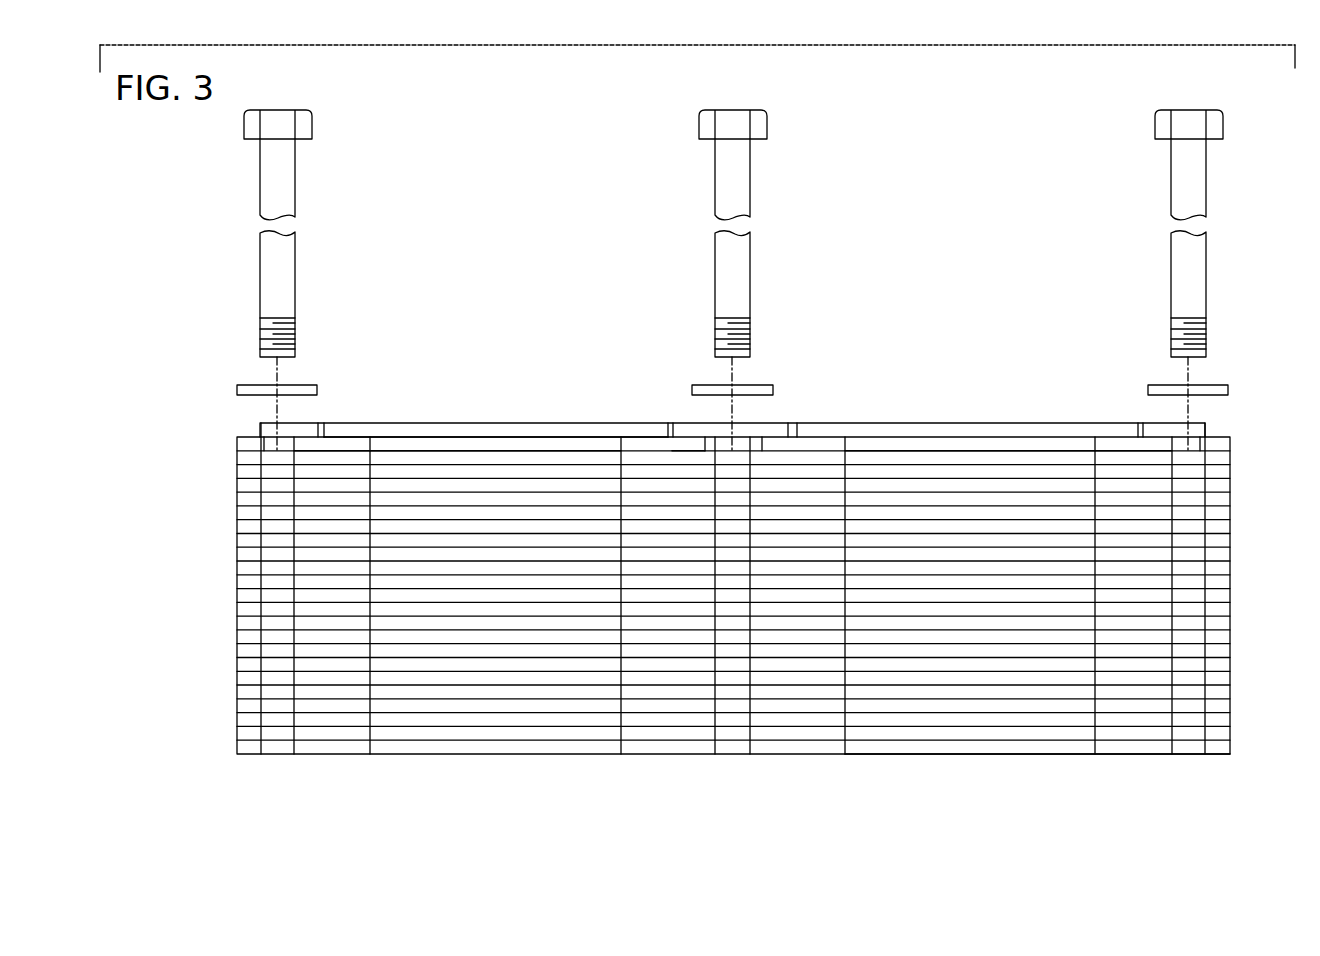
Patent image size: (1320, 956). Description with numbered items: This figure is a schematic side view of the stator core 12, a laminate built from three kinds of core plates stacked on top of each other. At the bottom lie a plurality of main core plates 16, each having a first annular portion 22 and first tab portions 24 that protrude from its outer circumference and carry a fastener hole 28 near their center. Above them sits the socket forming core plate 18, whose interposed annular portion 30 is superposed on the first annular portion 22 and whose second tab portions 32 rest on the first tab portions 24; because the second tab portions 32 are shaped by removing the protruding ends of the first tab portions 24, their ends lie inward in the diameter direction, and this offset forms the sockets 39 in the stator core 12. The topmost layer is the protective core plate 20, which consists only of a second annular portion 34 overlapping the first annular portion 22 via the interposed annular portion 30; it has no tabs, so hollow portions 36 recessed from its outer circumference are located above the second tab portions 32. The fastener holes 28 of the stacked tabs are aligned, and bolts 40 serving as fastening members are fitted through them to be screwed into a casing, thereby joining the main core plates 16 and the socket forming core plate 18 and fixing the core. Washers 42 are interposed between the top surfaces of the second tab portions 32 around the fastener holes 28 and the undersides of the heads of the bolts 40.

The stator core 12 is at (1242, 514).
The main core plate 16 is at (981, 735).
The socket forming core plate 18 is at (923, 444).
The protective core plate 20 is at (977, 427).
The first annular portion 22 is at (553, 733).
The first tab portions 24 is at (327, 733).
The fastener hole 28 is at (262, 718).
The interposed annular portion 30 is at (452, 447).
The second tab portions 32 is at (357, 447).
The second annular portion 34 is at (510, 436).
The hollow portions 36 is at (317, 435).
The sockets 39 is at (245, 443).
The bolts 40 is at (287, 173).
The washers 42 is at (303, 384).